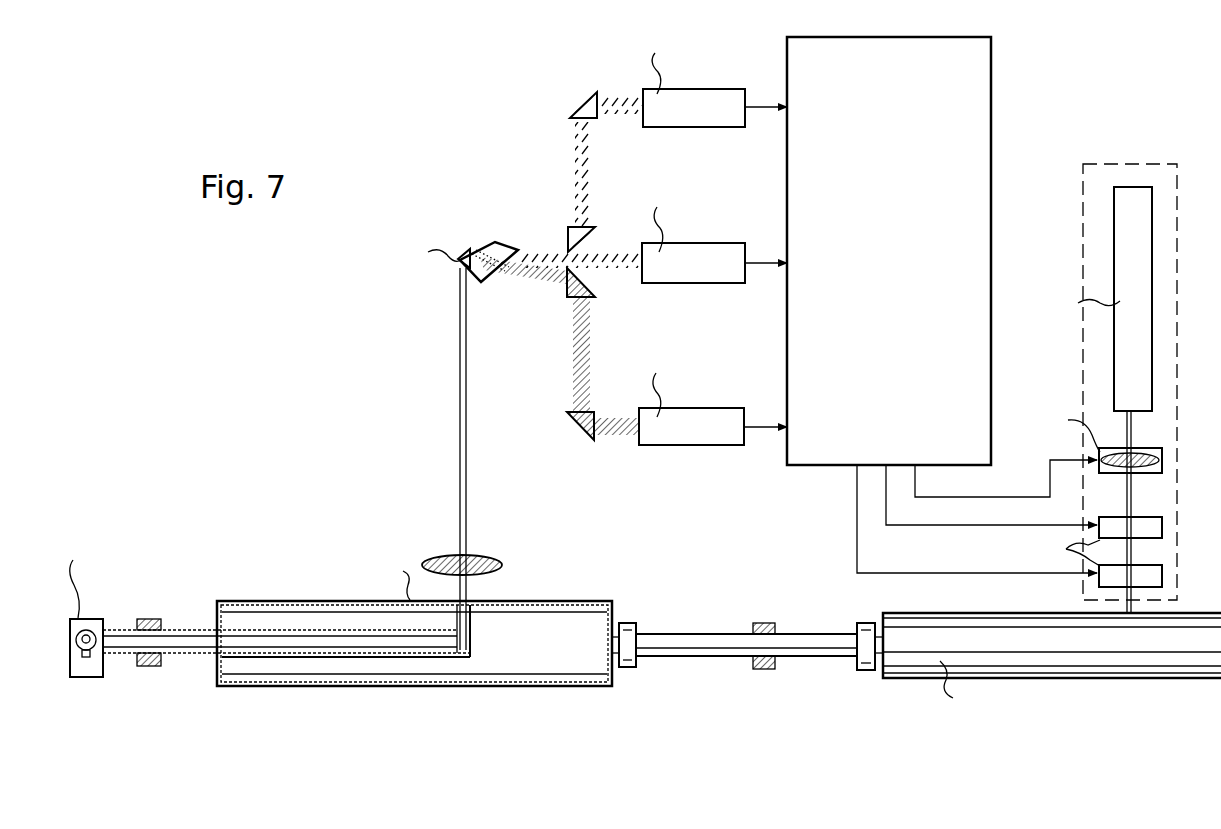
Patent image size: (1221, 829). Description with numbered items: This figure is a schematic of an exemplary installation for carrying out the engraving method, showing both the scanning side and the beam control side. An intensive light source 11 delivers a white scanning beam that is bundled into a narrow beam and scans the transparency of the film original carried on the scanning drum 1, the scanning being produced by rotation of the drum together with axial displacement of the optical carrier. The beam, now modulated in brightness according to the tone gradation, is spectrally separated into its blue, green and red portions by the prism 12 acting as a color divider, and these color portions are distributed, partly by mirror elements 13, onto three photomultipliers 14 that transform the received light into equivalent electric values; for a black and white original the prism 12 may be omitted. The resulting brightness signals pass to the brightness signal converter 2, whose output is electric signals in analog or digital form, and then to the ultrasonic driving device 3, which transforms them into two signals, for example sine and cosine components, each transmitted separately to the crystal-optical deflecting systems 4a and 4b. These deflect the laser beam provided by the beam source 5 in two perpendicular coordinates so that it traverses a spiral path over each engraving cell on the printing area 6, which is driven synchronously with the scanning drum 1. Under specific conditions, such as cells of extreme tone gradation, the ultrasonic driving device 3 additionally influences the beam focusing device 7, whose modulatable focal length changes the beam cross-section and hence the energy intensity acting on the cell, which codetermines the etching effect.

The scanning drum 1 is at (554, 618).
The brightness signal converter 2 is at (980, 84).
The ultrasonic driving device 3 is at (923, 251).
The crystal-optical deflecting system 4a is at (1163, 527).
The crystal-optical deflecting system 4b is at (1163, 576).
The beam source 5 is at (1148, 233).
The printing area 6 is at (982, 625).
The beam focusing device 7 is at (1163, 462).
The intensive light source 11 is at (92, 622).
The prism 12 is at (505, 246).
The mirror elements 13 is at (576, 101).
The photomultiplier 14 is at (717, 123).